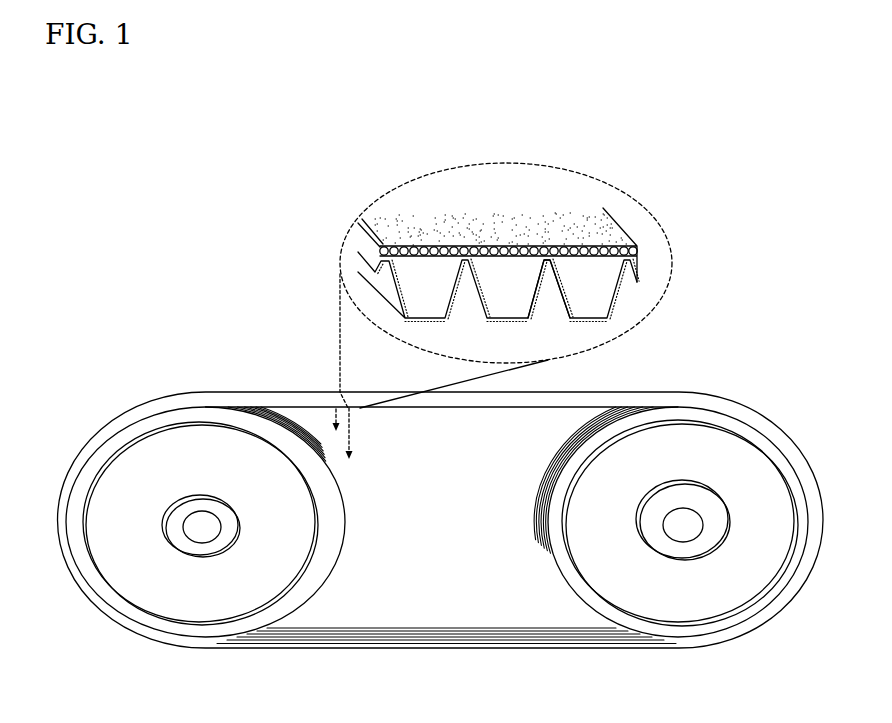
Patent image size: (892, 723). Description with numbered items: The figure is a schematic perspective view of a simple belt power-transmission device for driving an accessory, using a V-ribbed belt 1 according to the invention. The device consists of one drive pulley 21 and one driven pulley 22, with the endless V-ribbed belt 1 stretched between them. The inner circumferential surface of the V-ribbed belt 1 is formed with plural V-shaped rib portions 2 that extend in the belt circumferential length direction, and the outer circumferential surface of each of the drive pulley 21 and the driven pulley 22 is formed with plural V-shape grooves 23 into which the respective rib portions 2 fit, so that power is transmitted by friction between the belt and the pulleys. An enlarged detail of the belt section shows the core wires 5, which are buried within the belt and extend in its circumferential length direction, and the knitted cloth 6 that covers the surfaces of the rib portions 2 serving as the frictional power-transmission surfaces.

The V-ribbed belt 1 is at (289, 368).
The rib portions 2 is at (497, 319).
The core wires 5 is at (553, 247).
The knitted cloth 6 is at (535, 291).
The drive pulley 21 is at (357, 530).
The driven pulley 22 is at (526, 535).
The V-shape grooves 23 is at (272, 408).